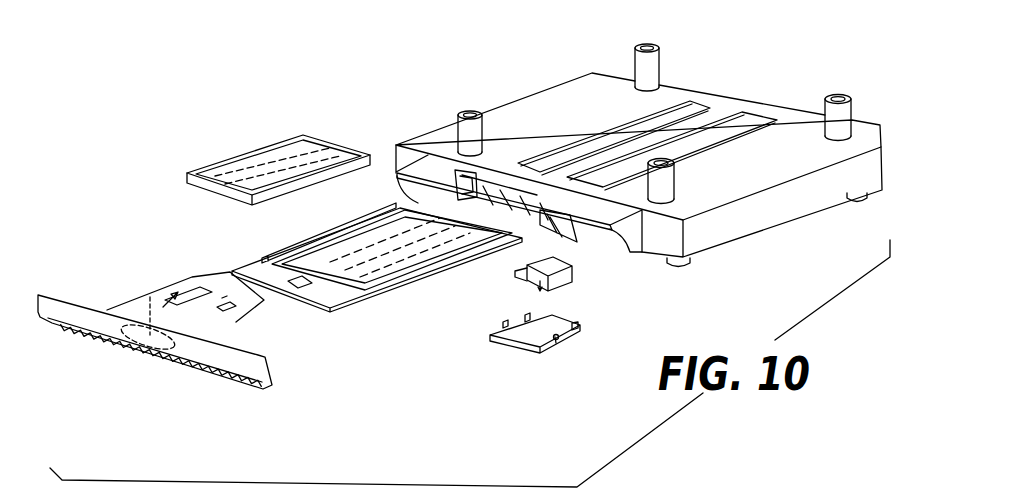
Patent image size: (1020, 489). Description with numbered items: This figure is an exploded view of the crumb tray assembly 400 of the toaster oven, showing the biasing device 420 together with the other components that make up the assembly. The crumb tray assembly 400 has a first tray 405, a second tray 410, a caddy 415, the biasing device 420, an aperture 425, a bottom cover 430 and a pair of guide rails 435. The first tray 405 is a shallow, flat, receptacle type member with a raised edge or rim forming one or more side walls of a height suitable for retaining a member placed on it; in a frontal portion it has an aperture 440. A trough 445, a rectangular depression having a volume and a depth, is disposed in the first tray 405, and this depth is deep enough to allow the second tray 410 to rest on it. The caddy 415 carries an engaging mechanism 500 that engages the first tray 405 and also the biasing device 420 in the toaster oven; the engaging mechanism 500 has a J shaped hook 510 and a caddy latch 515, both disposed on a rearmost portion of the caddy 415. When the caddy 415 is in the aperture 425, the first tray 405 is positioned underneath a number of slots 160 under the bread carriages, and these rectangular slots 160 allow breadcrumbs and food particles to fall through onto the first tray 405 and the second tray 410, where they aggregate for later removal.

The crumb tray assembly 400 is at (313, 102).
The slots 160 is at (733, 128).
The guide rails 435 is at (465, 184).
The aperture 425 is at (527, 222).
The second tray 410 is at (243, 152).
The first tray 405 is at (353, 302).
The trough 445 is at (358, 245).
The aperture 440 is at (297, 277).
The biasing device 420 is at (570, 273).
The bottom cover 430 is at (550, 350).
The engaging mechanism 500 is at (157, 268).
The J shaped hook 510 is at (227, 307).
The caddy latch 515 is at (150, 297).
The caddy 415 is at (95, 307).